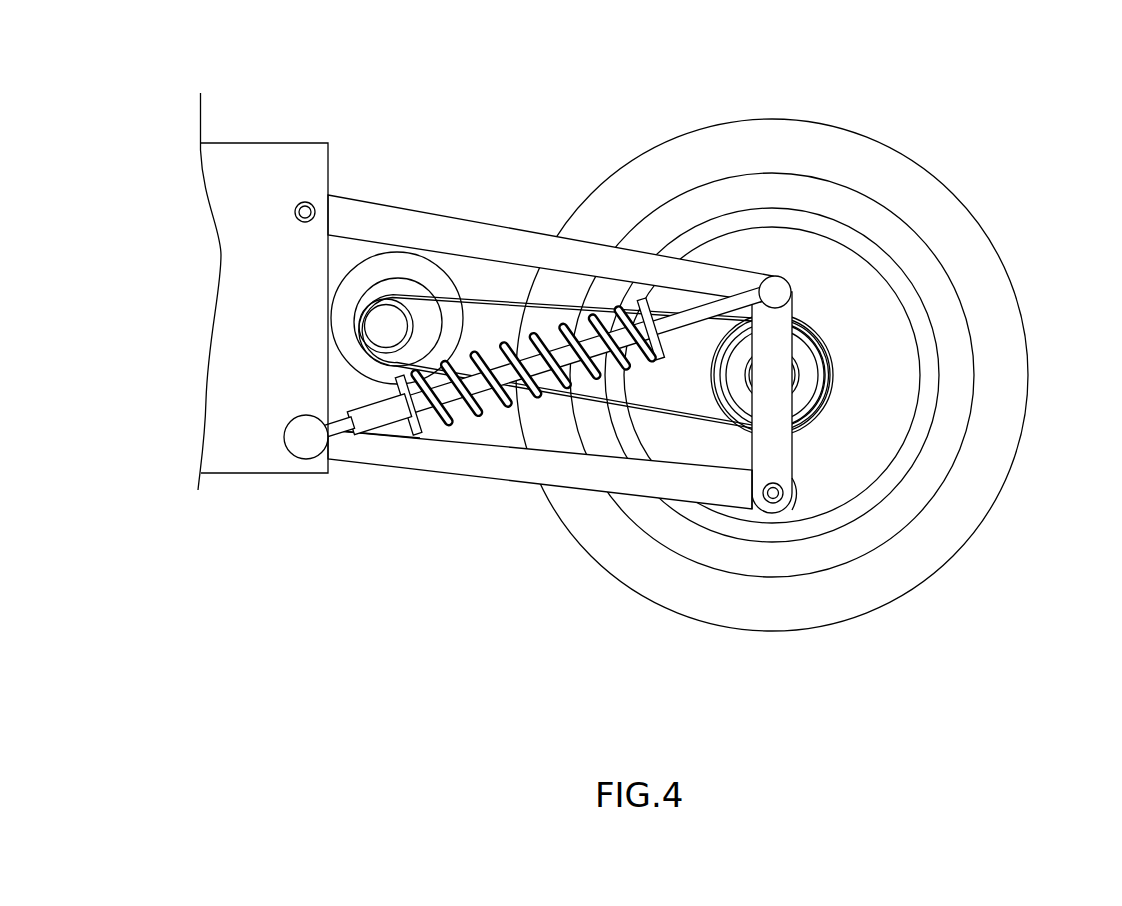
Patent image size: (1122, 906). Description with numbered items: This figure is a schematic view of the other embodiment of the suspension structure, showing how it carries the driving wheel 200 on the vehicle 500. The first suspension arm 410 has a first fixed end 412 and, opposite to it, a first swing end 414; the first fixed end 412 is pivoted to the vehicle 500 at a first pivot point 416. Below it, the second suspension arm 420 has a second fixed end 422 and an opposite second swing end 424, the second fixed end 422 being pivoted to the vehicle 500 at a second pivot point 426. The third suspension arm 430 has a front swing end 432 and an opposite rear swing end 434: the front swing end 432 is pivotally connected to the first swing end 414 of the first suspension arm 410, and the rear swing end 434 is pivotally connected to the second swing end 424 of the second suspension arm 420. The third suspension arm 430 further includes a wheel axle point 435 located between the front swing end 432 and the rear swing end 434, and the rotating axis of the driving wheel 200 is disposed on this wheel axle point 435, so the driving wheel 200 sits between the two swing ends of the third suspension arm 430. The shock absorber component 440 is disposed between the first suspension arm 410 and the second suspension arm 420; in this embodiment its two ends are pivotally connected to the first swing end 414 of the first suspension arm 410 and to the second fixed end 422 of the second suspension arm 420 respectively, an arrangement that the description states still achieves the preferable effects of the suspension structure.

The vehicle 500 is at (100, 39).
The driving wheel 200 is at (993, 324).
The first suspension arm 410 is at (532, 250).
The first fixed end 412 is at (342, 222).
The first swing end 414 is at (728, 287).
The first pivot point 416 is at (308, 203).
The second suspension arm 420 is at (505, 455).
The second fixed end 422 is at (377, 445).
The second swing end 424 is at (723, 485).
The second pivot point 426 is at (308, 435).
The third suspension arm 430 is at (770, 347).
The front swing end 432 is at (788, 282).
The rear swing end 434 is at (773, 497).
The wheel axle point 435 is at (780, 375).
The shock absorber component 440 is at (448, 428).